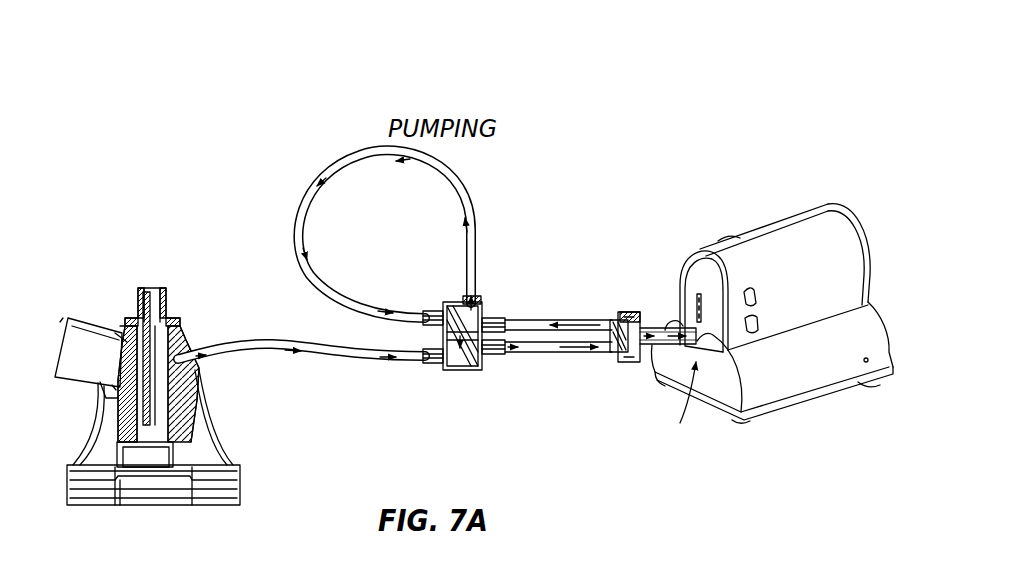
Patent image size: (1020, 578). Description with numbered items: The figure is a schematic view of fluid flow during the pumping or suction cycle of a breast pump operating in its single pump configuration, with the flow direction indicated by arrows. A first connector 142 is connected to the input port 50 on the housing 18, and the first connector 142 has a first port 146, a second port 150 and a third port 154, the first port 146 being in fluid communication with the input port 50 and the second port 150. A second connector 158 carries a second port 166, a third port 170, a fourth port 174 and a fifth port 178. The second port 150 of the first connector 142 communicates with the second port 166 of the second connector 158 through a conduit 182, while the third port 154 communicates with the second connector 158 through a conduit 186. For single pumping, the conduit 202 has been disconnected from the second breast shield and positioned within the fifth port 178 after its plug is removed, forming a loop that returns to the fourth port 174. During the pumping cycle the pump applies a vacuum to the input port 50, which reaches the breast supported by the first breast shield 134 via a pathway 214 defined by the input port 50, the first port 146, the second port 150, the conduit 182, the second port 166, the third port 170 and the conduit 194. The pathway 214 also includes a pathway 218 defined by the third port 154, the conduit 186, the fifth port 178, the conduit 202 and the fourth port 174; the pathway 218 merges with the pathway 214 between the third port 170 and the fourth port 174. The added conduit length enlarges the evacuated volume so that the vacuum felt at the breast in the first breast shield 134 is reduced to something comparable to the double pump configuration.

The housing 18 is at (799, 227).
The input port 50 is at (677, 405).
The first breast shield 134 is at (203, 396).
The first connector 142 is at (658, 343).
The first port 146 is at (658, 346).
The second port 150 is at (604, 342).
The third port 154 is at (614, 320).
The second connector 158 is at (448, 351).
The second port 166 is at (502, 356).
The third port 170 is at (430, 366).
The fourth port 174 is at (434, 310).
The fifth port 178 is at (486, 313).
The conduit 182 is at (548, 354).
The conduit 186 is at (533, 319).
The conduit 194 is at (301, 354).
The conduit 202 is at (356, 234).
The pathway 214 is at (361, 361).
The pathway 218 is at (302, 233).